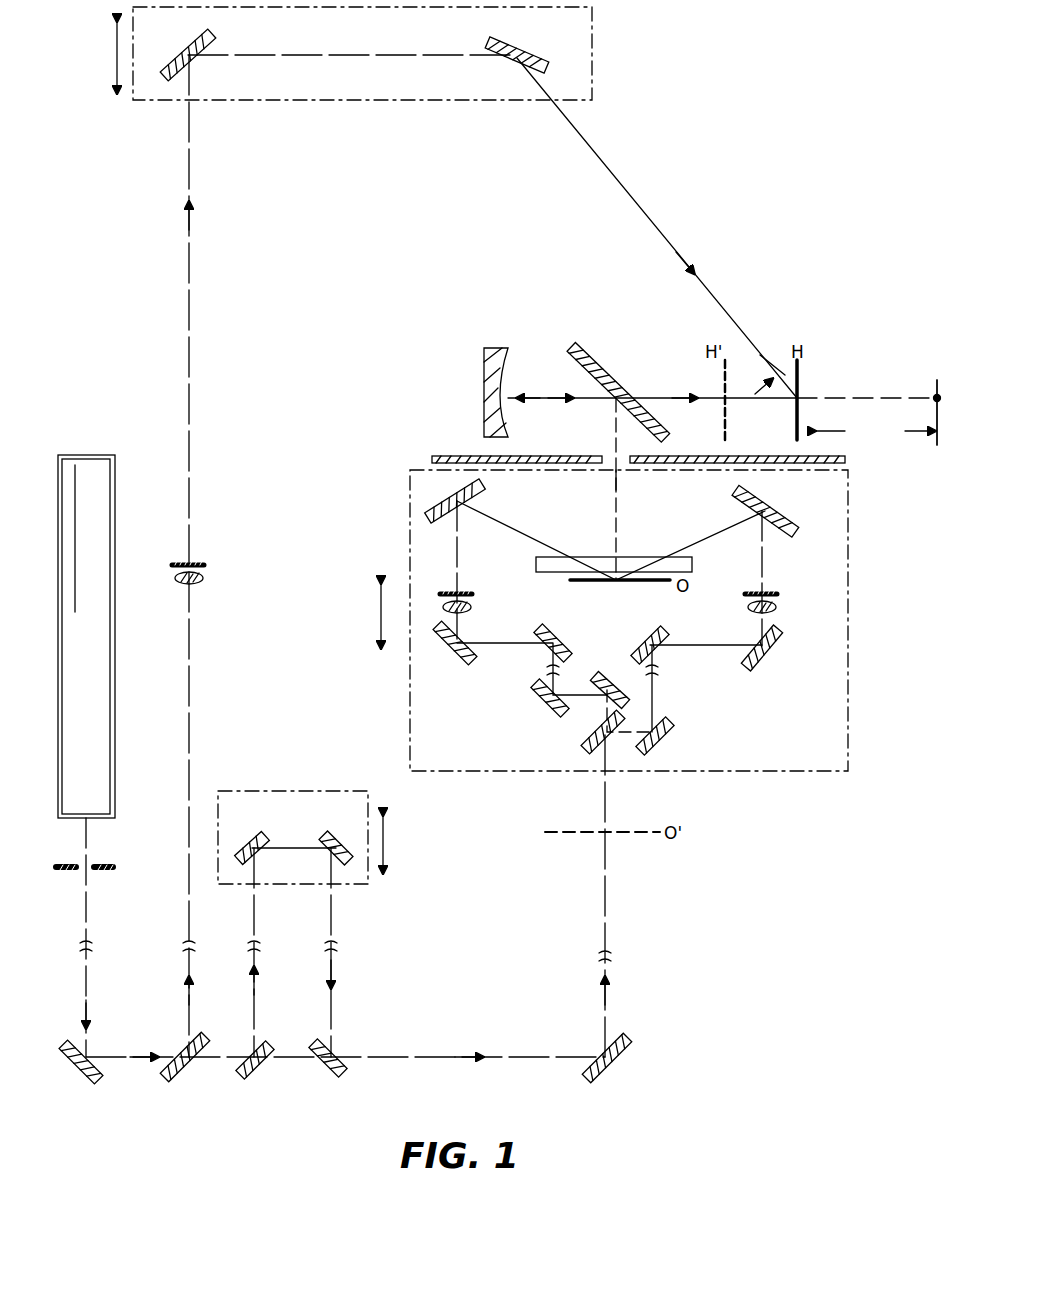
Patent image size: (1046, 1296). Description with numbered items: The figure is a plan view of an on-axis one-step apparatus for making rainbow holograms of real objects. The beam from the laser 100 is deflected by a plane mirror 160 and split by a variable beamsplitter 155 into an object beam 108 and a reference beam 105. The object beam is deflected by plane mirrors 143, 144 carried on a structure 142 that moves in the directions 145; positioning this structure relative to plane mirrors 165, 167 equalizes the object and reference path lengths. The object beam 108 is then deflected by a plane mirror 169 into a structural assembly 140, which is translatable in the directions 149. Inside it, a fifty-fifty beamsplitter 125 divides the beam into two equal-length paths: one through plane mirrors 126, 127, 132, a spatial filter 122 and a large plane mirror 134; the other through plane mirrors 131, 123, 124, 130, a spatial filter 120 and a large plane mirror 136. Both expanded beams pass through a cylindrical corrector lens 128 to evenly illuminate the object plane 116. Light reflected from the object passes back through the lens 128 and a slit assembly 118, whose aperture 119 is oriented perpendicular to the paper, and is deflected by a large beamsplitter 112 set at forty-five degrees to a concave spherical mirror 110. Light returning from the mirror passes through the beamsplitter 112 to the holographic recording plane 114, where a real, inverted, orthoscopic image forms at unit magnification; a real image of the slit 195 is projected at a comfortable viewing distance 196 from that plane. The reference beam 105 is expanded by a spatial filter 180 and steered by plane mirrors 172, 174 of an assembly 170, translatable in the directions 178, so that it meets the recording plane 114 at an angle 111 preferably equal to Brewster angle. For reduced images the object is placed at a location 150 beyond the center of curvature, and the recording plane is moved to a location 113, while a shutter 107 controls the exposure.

The laser 100 is at (116, 470).
The reference beam 105 is at (190, 690).
The shutter 107 is at (104, 870).
The object beam 108 is at (440, 1057).
The concave spherical mirror 110 is at (484, 353).
The angle of the reference beam 111 is at (780, 370).
The beamsplitter 112 is at (625, 352).
The reduced image location 113 is at (727, 430).
The holographic recording plane 114 is at (832, 388).
The object plane 116 is at (600, 584).
The slit assembly 118 is at (456, 444).
The slit aperture 119 is at (620, 478).
The spatial filter 120 is at (470, 594).
The spatial filter 122 is at (775, 594).
The plane mirror 123 is at (537, 696).
The plane mirror 124 is at (570, 640).
The beamsplitter 125 is at (594, 722).
The plane mirror 126 is at (662, 740).
The plane mirror 127 is at (638, 645).
The cylindrical corrector lens 128 is at (545, 572).
The plane mirror 130 is at (452, 660).
The plane mirror 131 is at (615, 680).
The plane mirror 132 is at (768, 658).
The large plane mirror 134 is at (790, 504).
The large plane mirror 136 is at (425, 497).
The structural assembly 140 is at (410, 673).
The structure 142 is at (290, 791).
The plane mirror 143 is at (246, 835).
The plane mirror 144 is at (338, 835).
The directions of movement 145 is at (390, 820).
The directions of movement 149 is at (378, 612).
The object location beyond center of curvature 150 is at (571, 847).
The variable beamsplitter 155 is at (174, 1075).
The plane mirror 160 is at (76, 1075).
The plane mirror 165 is at (262, 1072).
The plane mirror 167 is at (325, 1075).
The plane mirror 169 is at (612, 1072).
The assembly 170 is at (320, 100).
The plane mirror 172 is at (196, 28).
The plane mirror 174 is at (518, 48).
The directions of movement 178 is at (110, 55).
The spatial filter 180 is at (205, 565).
The real image of the slit 195 is at (937, 384).
The viewing distance 196 is at (872, 431).